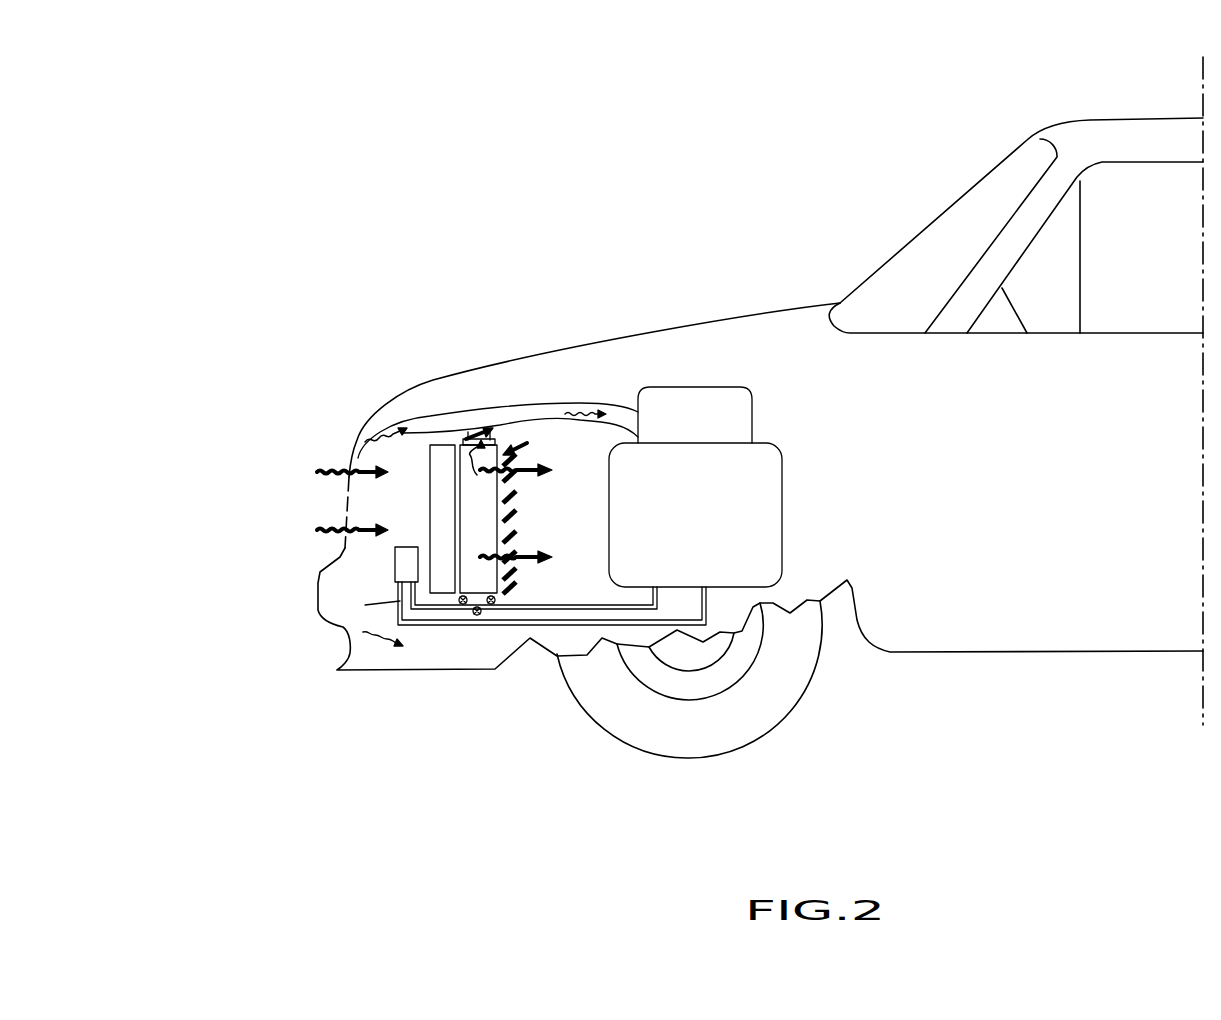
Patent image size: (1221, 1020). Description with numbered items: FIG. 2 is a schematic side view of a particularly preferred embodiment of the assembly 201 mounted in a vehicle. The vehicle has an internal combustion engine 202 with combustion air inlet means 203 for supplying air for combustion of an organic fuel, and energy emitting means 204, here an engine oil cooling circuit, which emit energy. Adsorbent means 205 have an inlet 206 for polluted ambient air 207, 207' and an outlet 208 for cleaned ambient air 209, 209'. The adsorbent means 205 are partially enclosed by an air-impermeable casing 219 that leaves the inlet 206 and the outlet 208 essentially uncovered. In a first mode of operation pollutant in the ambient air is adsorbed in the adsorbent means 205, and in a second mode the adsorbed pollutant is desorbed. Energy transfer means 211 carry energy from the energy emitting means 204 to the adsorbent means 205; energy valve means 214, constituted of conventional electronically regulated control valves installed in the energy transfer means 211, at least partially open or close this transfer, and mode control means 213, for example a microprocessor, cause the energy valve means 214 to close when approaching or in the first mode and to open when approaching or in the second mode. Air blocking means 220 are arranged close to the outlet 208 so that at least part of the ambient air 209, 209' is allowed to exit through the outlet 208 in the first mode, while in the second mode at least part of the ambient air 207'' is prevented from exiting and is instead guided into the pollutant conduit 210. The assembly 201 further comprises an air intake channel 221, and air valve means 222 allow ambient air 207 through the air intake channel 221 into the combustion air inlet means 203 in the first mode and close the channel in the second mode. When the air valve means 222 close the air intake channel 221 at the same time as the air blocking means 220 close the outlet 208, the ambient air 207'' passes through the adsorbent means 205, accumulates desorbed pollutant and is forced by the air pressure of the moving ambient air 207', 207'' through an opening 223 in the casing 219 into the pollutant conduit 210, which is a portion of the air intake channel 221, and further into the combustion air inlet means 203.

The assembly 201 is at (405, 333).
The internal combustion engine 202 is at (721, 425).
The combustion air inlet means 203 is at (622, 412).
The energy emitting means 204 is at (710, 528).
The adsorbent means 205 is at (481, 516).
The inlet 206 is at (428, 443).
The ambient air 207 is at (320, 471).
The ambient air 207' is at (310, 534).
The ambient air 207'' is at (431, 478).
The outlet 208 is at (487, 568).
The ambient air 209 is at (536, 578).
The ambient air 209' is at (544, 472).
The pollutant conduit 210 is at (548, 407).
The energy transfer means 211 is at (590, 607).
The mode control means 213 is at (466, 630).
The energy valve means 214 is at (491, 606).
The air-impermeable casing 219 is at (482, 567).
The air blocking means 220 is at (524, 447).
The air intake channel 221 is at (415, 427).
The air valve means 222 is at (472, 430).
The opening 223 is at (495, 433).